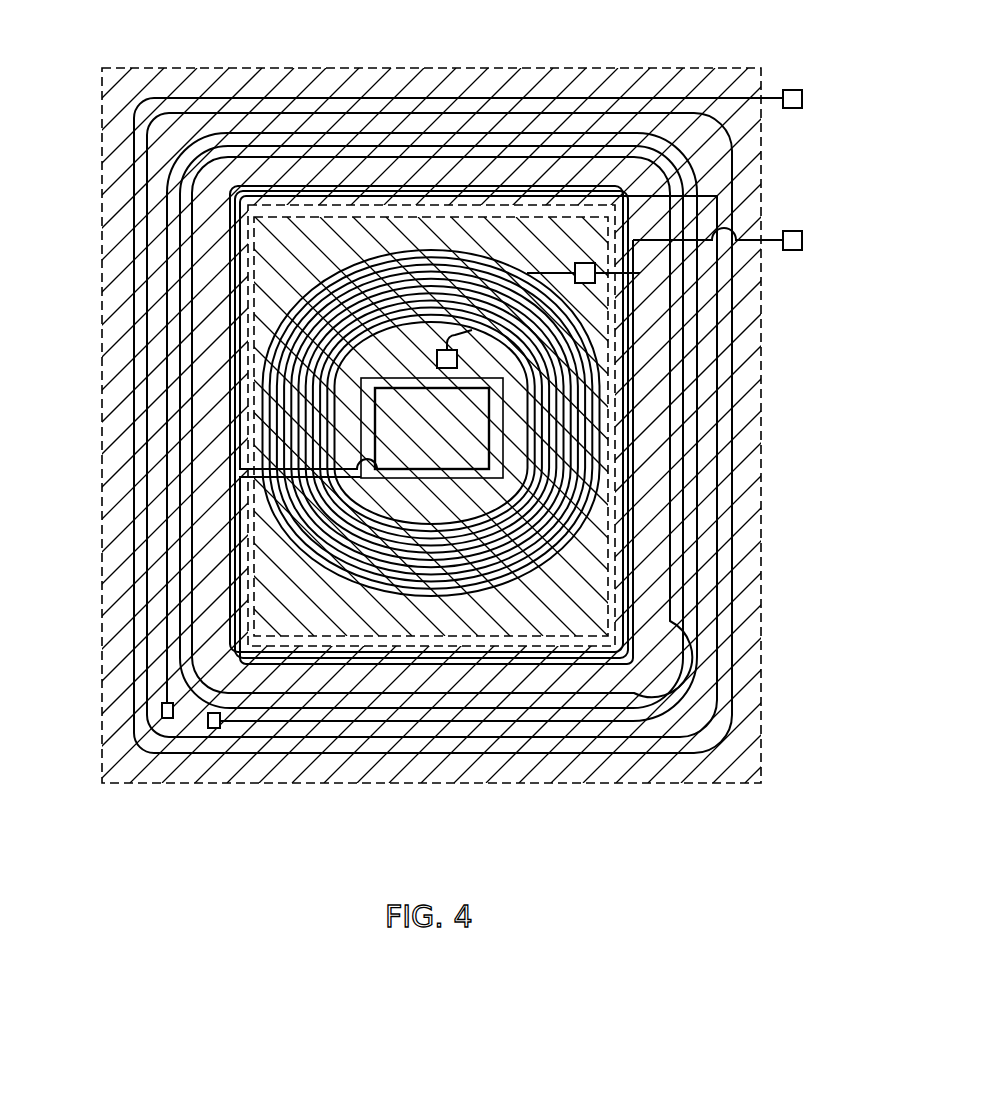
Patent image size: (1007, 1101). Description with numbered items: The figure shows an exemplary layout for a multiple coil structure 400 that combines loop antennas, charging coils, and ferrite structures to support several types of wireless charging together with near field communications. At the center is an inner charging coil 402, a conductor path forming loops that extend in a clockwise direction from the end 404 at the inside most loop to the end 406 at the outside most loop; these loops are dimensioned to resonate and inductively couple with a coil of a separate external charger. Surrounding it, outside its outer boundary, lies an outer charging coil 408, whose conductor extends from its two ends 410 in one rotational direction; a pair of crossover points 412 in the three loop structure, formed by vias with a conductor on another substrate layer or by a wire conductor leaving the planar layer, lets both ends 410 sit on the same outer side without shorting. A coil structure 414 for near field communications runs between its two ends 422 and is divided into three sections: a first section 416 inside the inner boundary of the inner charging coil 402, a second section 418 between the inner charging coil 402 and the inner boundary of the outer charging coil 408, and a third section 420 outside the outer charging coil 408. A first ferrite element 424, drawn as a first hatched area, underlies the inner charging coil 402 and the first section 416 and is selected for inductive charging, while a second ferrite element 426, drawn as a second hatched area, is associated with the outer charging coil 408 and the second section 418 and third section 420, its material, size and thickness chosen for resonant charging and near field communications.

The multiple coil structure 400 is at (735, 50).
The inner charging coil 402 is at (590, 350).
The end corresponding to the inside most loop 404 is at (440, 352).
The end corresponding to the outside most loop 406 is at (640, 273).
The outer charging coil 408 is at (712, 483).
The ends of the outer charging coil 410 is at (162, 710).
The crossover points 412 is at (440, 134).
The coil structure for supporting near field communications 414 is at (640, 627).
The first section 416 is at (438, 478).
The second section 418 is at (636, 525).
The third section 420 is at (733, 690).
The ends of the coil structure 422 is at (793, 109).
The first ferrite element 424 is at (568, 637).
The second ferrite element 426 is at (665, 783).